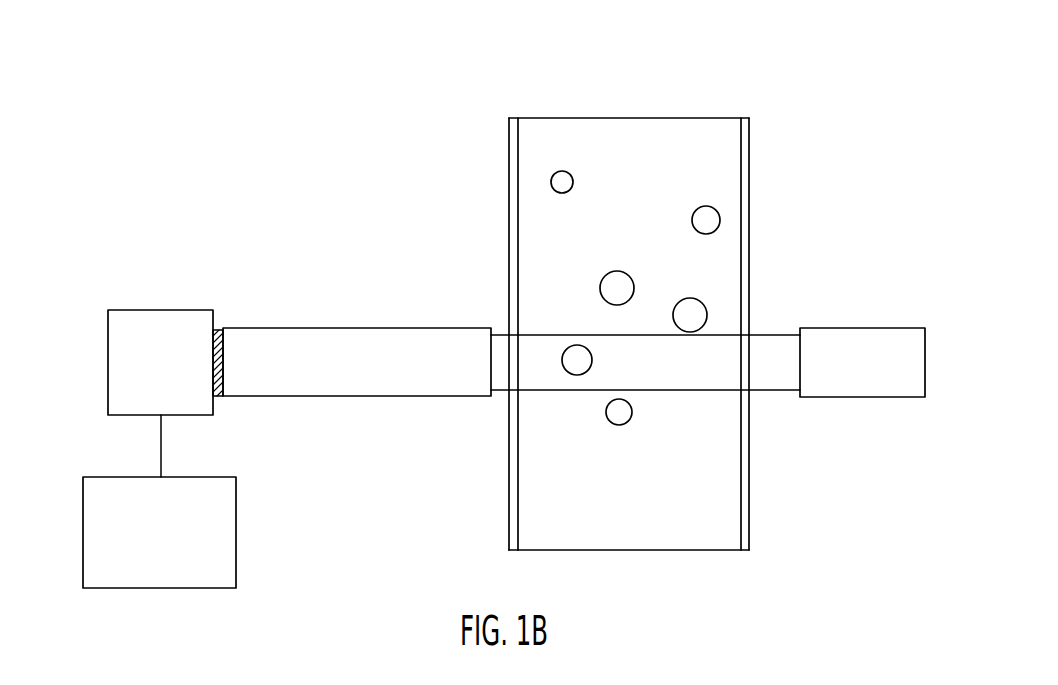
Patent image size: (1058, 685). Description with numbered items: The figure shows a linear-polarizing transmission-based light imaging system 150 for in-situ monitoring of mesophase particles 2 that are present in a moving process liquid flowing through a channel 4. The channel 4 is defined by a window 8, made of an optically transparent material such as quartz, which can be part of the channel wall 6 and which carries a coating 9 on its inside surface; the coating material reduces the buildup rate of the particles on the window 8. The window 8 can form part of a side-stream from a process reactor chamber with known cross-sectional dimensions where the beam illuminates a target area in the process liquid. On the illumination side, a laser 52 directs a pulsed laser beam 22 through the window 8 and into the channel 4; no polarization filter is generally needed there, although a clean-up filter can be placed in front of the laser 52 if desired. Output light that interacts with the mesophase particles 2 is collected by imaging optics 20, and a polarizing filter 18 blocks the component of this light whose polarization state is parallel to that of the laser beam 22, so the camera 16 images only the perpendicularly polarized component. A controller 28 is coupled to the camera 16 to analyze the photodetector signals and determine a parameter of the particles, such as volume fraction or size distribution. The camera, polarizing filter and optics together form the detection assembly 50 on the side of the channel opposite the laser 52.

The mesophase particles 2 is at (618, 271).
The flow channel 4 is at (638, 541).
The channel wall 6 is at (750, 524).
The window 8 is at (508, 524).
The coating 9 is at (518, 140).
The camera 16 is at (174, 389).
The polarizing filter 18 is at (214, 398).
The imaging optics 20 is at (396, 379).
The light beam 22 is at (770, 334).
The controller 28 is at (83, 535).
The sensor assembly 50 is at (333, 460).
The laser 52 is at (874, 387).
The linear-polarizing transmission-based light imaging system 150 is at (386, 240).